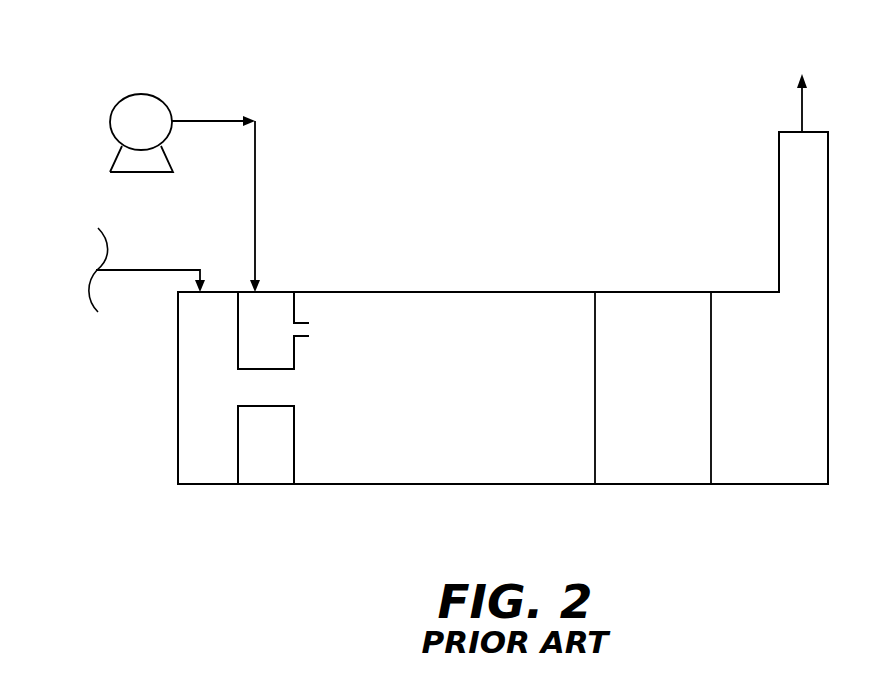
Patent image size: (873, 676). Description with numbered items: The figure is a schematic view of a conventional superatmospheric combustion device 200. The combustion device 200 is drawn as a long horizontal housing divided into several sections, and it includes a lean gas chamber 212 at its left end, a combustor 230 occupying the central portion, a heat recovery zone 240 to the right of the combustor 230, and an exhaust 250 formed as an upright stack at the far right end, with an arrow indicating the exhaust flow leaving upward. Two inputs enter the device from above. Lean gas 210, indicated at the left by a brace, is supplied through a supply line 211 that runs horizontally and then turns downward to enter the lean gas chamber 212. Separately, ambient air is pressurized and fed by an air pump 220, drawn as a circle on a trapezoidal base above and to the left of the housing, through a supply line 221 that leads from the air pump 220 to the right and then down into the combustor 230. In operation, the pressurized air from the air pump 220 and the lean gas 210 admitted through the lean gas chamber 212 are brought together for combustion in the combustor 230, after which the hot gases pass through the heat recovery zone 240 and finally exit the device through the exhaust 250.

The combustion device 200 is at (266, 508).
The lean gas 210 is at (61, 272).
The supply line 211 is at (121, 270).
The lean gas chamber 212 is at (230, 403).
The air pump 220 is at (109, 119).
The supply line 221 is at (204, 120).
The combustor 230 is at (432, 400).
The heat recovery zone 240 is at (673, 404).
The exhaust 250 is at (799, 76).